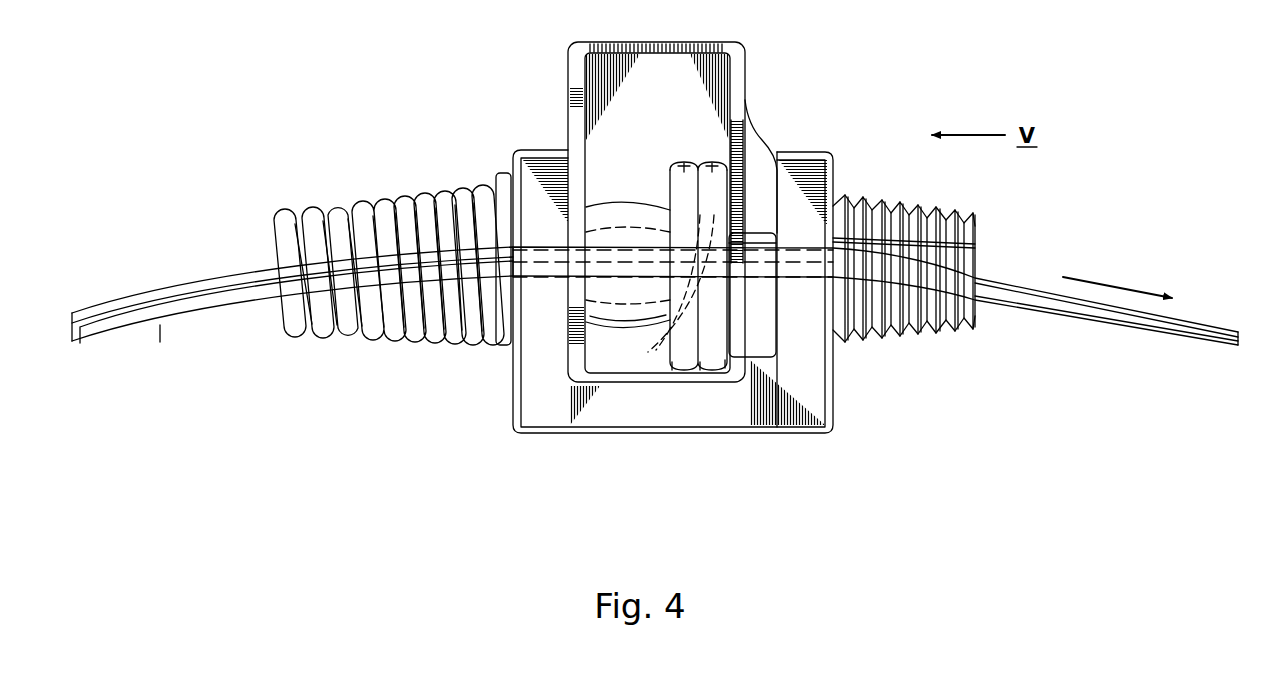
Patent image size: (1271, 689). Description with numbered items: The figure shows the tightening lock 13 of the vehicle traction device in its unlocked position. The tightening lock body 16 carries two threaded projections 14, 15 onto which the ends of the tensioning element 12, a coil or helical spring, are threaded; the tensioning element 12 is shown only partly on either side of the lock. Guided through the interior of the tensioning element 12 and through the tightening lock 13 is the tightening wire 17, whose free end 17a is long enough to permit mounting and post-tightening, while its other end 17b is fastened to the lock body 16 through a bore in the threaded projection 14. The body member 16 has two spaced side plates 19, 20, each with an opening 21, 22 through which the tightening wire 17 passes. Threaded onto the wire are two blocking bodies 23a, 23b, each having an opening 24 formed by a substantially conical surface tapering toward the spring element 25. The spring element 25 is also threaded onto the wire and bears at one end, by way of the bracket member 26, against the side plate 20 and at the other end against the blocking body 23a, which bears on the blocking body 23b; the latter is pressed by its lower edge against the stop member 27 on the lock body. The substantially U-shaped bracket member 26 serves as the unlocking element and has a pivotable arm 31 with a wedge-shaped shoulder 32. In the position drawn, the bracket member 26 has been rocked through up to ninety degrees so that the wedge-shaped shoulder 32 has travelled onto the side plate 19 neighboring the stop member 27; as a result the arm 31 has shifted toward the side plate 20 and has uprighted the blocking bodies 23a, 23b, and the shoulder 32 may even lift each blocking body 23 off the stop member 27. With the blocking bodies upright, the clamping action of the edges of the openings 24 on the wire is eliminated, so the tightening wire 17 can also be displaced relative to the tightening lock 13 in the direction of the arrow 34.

The tensioning element 12 is at (318, 212).
The tightening lock 13 is at (840, 443).
The threaded projection 14 is at (409, 344).
The threaded projection 15 is at (929, 343).
The tightening lock body 16 is at (601, 414).
The tightening wire 17 is at (1099, 306).
The free end of tightening wire 17a is at (86, 343).
The other end of tightening wire 17b is at (118, 305).
The side plate 19 is at (810, 162).
The side plate 20 is at (541, 160).
The opening 21 is at (790, 285).
The opening 22 is at (557, 283).
The blocking body 23 is at (712, 166).
The blocking body 23a is at (673, 368).
The blocking body 23b is at (702, 372).
The opening 24 is at (662, 292).
The spring element 25 is at (613, 228).
The bracket member 26 is at (566, 40).
The stop member 27 is at (713, 367).
The pivotable arm 31 is at (752, 88).
The wedge-shaped shoulder 32 is at (763, 150).
The arrow 34 is at (1107, 284).